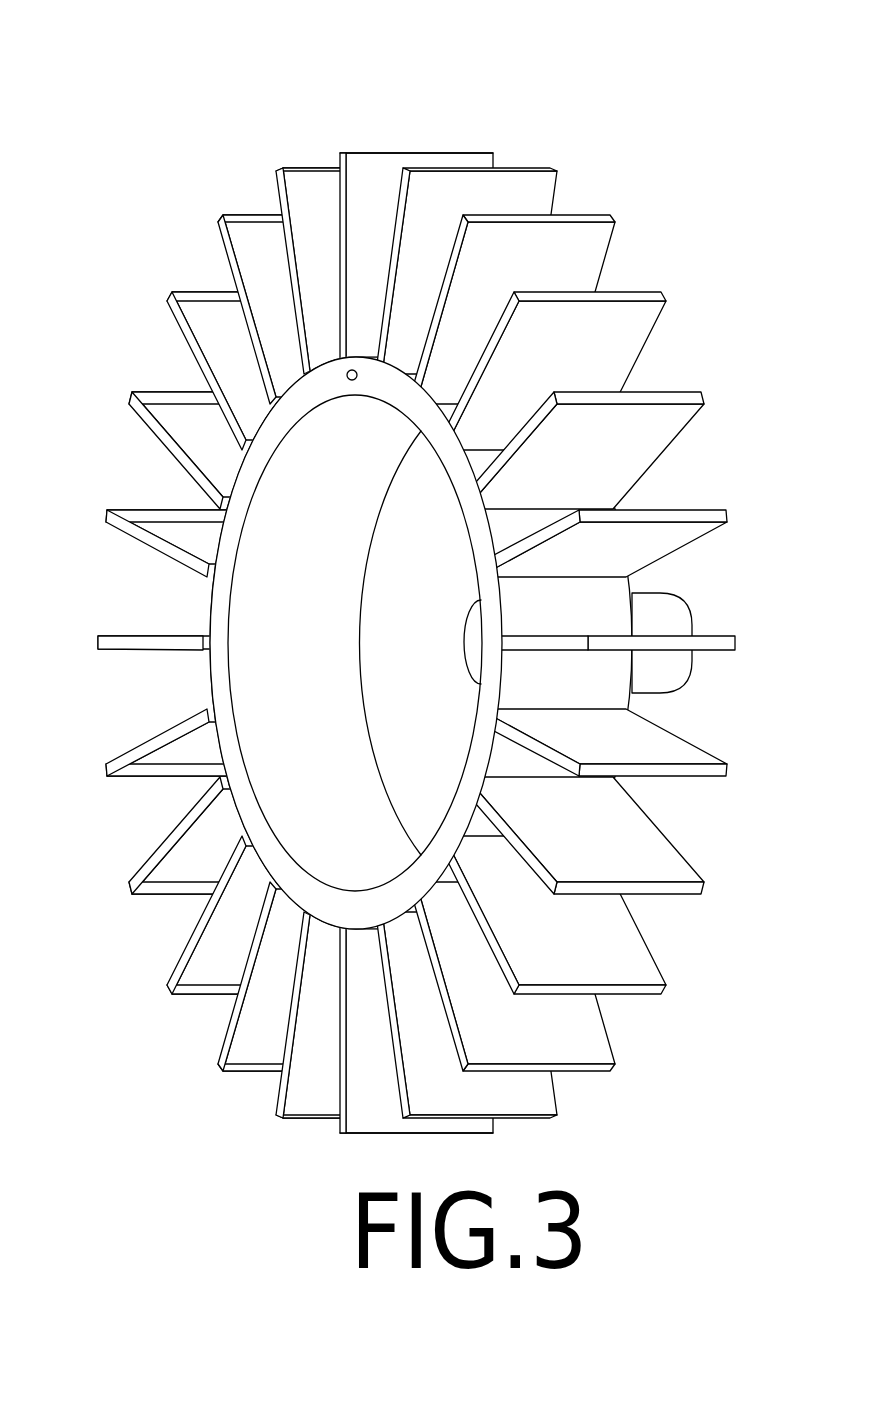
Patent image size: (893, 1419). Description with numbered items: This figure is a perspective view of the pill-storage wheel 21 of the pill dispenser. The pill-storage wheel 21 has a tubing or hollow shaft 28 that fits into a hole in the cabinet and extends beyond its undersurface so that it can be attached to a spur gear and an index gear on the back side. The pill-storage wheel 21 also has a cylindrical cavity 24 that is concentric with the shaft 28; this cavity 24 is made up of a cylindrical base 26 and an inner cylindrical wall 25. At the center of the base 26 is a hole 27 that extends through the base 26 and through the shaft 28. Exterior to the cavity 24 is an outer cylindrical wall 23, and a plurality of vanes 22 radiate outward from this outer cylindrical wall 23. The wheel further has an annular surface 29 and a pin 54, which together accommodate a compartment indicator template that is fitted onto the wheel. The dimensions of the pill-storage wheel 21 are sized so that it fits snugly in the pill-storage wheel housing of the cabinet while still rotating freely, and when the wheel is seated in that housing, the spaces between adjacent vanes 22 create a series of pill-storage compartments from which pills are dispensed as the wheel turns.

The pill-storage wheel 21 is at (409, 576).
The vanes 22 is at (635, 290).
The outer cylindrical wall 23 is at (597, 595).
The cylindrical cavity 24 is at (265, 643).
The inner cylindrical wall 25 is at (308, 708).
The cylindrical base 26 is at (446, 587).
The hole 27 is at (462, 663).
The hollow shaft 28 is at (695, 663).
The annular surface 29 is at (252, 807).
The pin 54 is at (345, 383).